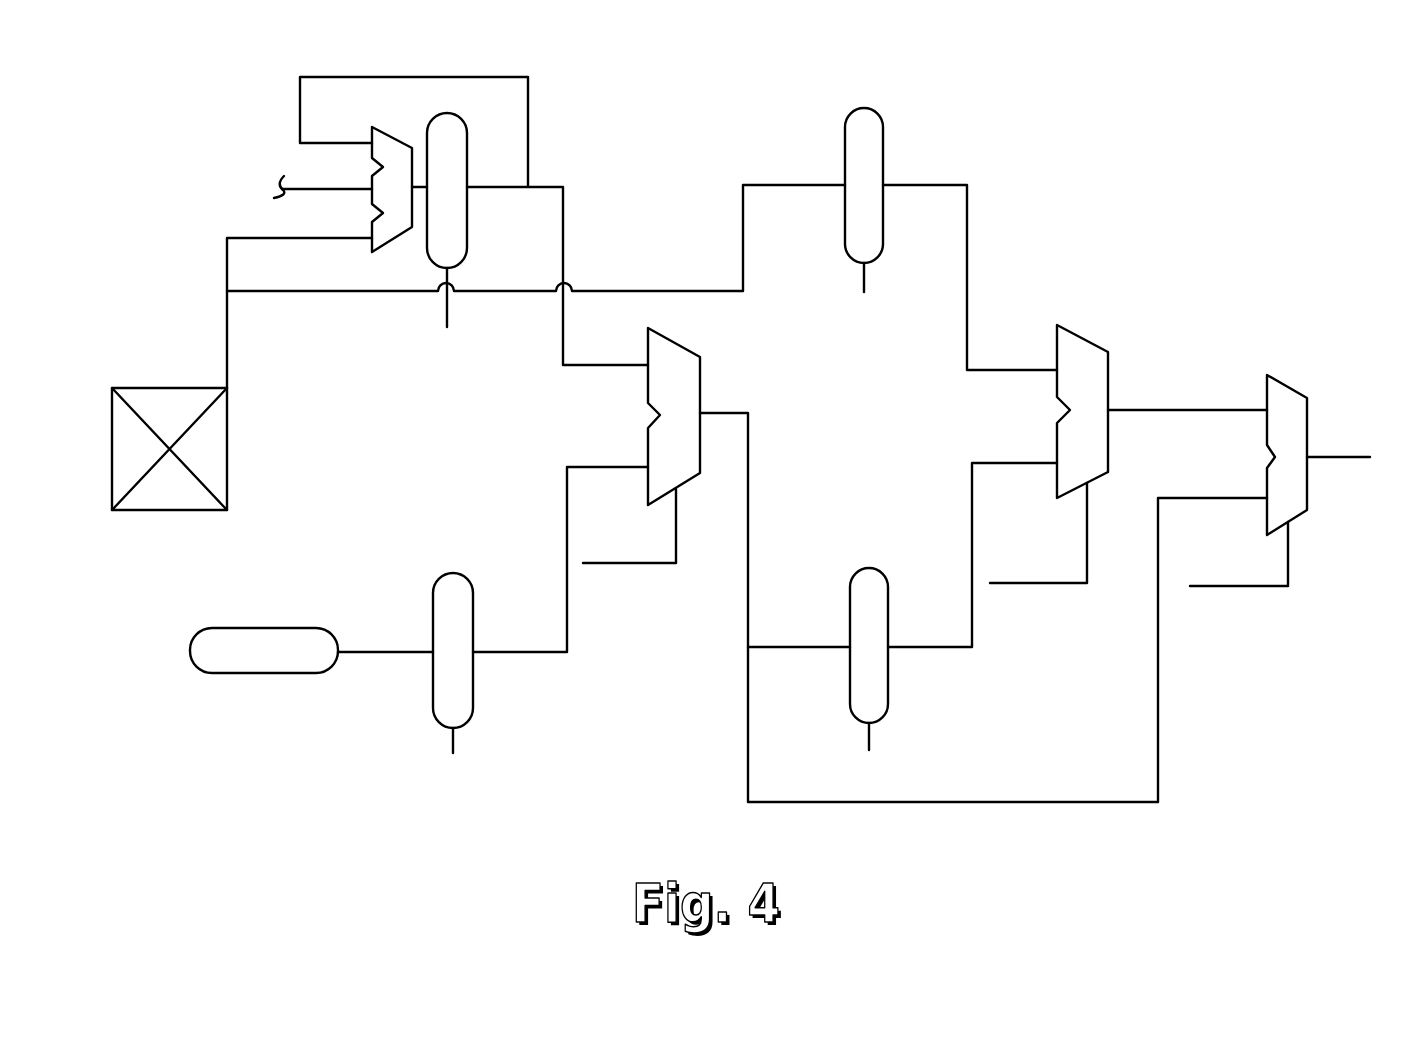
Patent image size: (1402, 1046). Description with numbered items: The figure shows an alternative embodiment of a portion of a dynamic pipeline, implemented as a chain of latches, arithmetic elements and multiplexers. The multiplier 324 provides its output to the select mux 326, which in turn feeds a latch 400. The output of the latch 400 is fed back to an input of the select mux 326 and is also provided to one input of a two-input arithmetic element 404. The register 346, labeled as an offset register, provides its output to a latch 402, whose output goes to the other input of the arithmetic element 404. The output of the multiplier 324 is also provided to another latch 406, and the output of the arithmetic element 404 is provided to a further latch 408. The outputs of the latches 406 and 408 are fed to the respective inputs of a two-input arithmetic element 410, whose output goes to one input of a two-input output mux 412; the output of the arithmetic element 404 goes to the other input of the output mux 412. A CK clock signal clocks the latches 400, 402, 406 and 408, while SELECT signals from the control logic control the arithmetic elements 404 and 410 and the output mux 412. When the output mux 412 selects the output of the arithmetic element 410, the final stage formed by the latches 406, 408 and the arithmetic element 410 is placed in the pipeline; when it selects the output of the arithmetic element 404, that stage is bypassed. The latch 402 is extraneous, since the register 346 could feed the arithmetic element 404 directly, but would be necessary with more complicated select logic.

The multiplier 324 is at (158, 388).
The select mux 326 is at (393, 132).
The register 346 is at (232, 628).
The latch 400 is at (448, 113).
The latch 402 is at (452, 573).
The arithmetic element 404 is at (676, 340).
The latch 406 is at (865, 108).
The latch 408 is at (868, 568).
The arithmetic element 410 is at (1087, 340).
The output mux 412 is at (1290, 390).